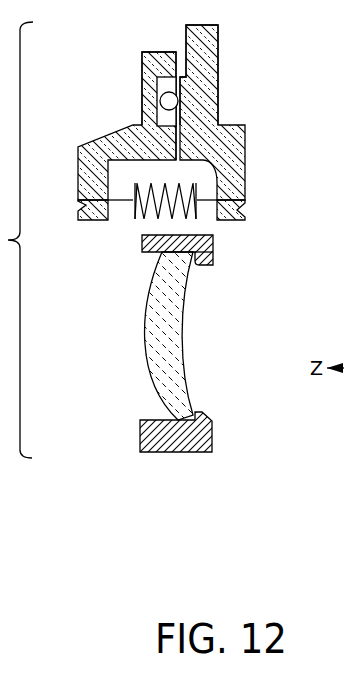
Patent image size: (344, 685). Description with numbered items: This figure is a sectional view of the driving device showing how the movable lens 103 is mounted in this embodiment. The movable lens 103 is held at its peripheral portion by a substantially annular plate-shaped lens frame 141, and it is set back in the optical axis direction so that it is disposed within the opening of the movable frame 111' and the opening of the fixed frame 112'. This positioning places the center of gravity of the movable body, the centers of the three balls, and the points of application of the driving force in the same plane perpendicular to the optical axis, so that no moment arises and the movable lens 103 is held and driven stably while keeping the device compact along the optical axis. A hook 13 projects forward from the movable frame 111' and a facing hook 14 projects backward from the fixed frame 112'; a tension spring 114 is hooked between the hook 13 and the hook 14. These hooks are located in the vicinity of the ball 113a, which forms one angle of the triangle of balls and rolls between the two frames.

The hook 13 is at (78, 172).
The hook 14 is at (247, 179).
The movable frame 111' is at (128, 105).
The fixed frame 112' is at (230, 74).
The ball 113a is at (172, 99).
The tension spring 114 is at (137, 220).
The movable lens 103 is at (147, 328).
The lens frame 141 is at (212, 438).